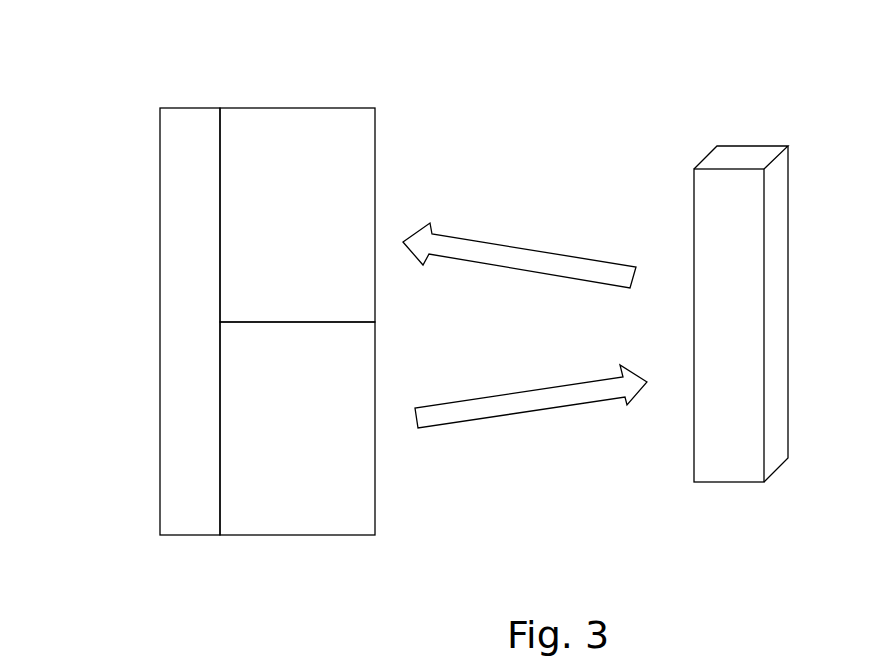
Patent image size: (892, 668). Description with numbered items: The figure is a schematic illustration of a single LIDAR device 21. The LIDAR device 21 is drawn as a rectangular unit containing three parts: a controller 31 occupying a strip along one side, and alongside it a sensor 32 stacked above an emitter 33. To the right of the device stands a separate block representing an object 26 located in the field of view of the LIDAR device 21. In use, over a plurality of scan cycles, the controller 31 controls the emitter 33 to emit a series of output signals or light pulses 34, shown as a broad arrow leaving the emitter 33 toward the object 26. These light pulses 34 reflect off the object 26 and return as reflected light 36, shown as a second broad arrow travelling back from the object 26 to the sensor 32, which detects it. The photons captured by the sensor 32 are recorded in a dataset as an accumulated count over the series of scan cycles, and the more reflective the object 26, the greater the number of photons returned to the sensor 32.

The LIDAR device 21 is at (198, 316).
The controller 31 is at (186, 143).
The sensor 32 is at (308, 160).
The emitter 33 is at (313, 473).
The light pulses 34 is at (561, 400).
The reflected light 36 is at (528, 260).
The object 26 is at (737, 342).